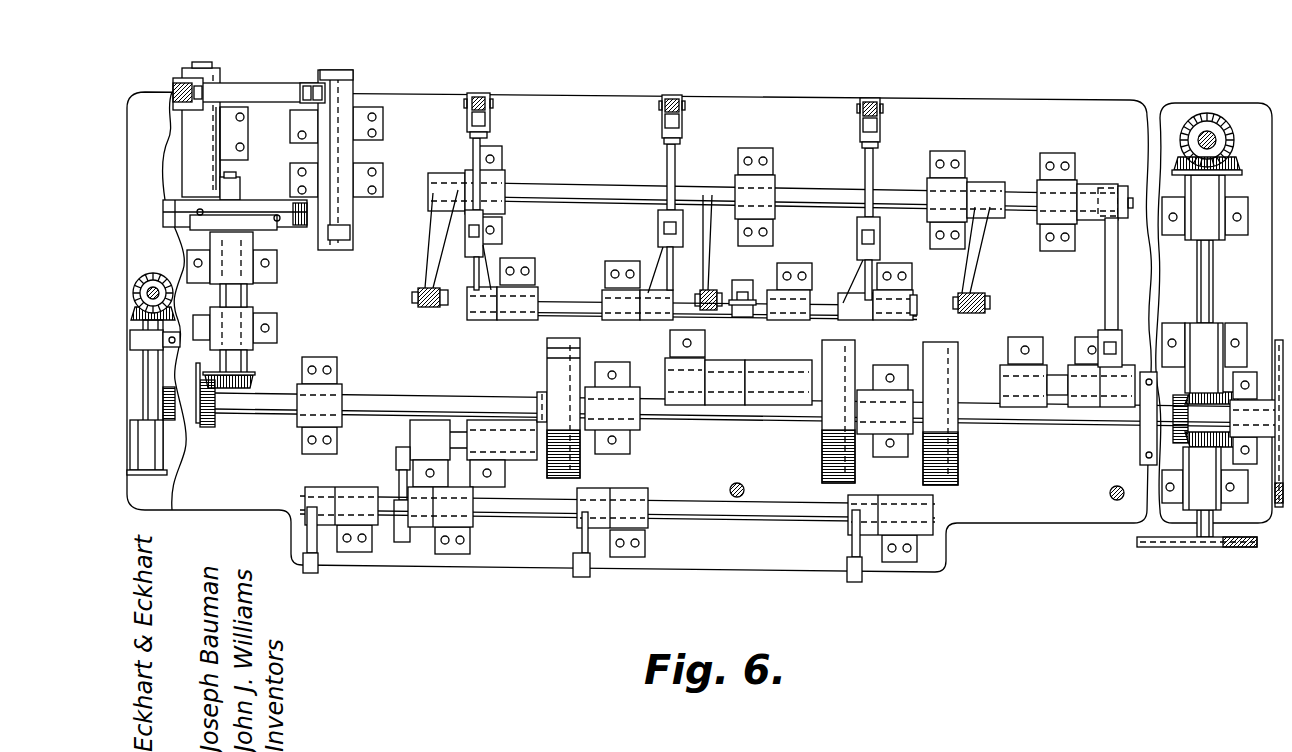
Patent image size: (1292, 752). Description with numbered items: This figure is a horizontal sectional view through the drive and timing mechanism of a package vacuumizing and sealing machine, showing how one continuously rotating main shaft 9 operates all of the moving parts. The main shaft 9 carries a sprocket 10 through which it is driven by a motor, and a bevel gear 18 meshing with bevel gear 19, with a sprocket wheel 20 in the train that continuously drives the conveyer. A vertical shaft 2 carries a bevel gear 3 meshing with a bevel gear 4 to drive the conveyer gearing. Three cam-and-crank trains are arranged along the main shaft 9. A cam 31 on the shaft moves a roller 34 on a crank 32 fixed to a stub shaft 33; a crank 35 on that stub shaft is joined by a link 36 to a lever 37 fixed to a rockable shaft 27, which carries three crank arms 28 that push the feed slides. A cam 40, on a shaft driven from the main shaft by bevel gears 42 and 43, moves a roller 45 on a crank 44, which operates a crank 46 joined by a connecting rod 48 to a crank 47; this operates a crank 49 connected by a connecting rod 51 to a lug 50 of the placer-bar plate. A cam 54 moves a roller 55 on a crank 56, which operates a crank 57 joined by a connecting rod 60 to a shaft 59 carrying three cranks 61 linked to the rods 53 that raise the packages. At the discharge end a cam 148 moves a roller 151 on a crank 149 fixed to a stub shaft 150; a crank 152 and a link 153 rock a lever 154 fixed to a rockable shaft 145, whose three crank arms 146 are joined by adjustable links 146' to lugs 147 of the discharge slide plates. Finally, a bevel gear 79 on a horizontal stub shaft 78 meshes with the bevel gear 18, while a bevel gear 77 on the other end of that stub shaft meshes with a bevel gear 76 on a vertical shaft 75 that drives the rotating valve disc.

The vertical shaft 2 is at (153, 290).
The bevel gear 3 is at (174, 292).
The bevel gear 4 is at (248, 300).
The main shaft 9 is at (283, 398).
The sprocket 10 is at (1278, 340).
The bevel gear 18 is at (1172, 440).
The bevel gear 19 is at (1235, 442).
The sprocket wheel 20 is at (1248, 547).
The rockable shaft 27 is at (673, 507).
The crank arm 28 is at (302, 537).
The cam 31 is at (547, 342).
The crank 32 is at (528, 437).
The stub shaft 33 is at (460, 432).
The roller 34 is at (542, 392).
The crank 35 is at (393, 458).
The link 36 is at (399, 485).
The lever 37 is at (403, 542).
The cam 40 is at (162, 204).
The bevel gear 42 is at (209, 423).
The bevel gear 43 is at (250, 380).
The crank 44 is at (222, 185).
The roller 45 is at (242, 185).
The crank 46 is at (176, 80).
The crank 47 is at (328, 85).
The connecting rod 48 is at (262, 92).
The crank 49 is at (325, 230).
The lug 50 is at (200, 217).
The connecting rod 51 is at (255, 205).
The rod 53 is at (430, 307).
The cam 54 is at (958, 483).
The roller 55 is at (958, 440).
The crank 56 is at (985, 372).
The crank 57 is at (1102, 330).
The shaft 59 is at (782, 200).
The connecting rod 60 is at (1115, 280).
The crank 61 is at (428, 266).
The vertical shaft 75 is at (1210, 135).
The bevel gear 76 is at (1230, 138).
The bevel gear 77 is at (1232, 163).
The stub shaft 78 is at (1214, 280).
The bevel gear 79 is at (1210, 392).
The rockable shaft 145 is at (551, 300).
The crank arm 146 is at (708, 256).
The adjustable link 146' is at (675, 172).
The lug 147 is at (486, 92).
The cam 148 is at (820, 468).
The crank 149 is at (807, 378).
The stub shaft 150 is at (665, 372).
The roller 151 is at (818, 443).
The crank 152 is at (740, 378).
The link 153 is at (670, 350).
The lever 154 is at (744, 282).